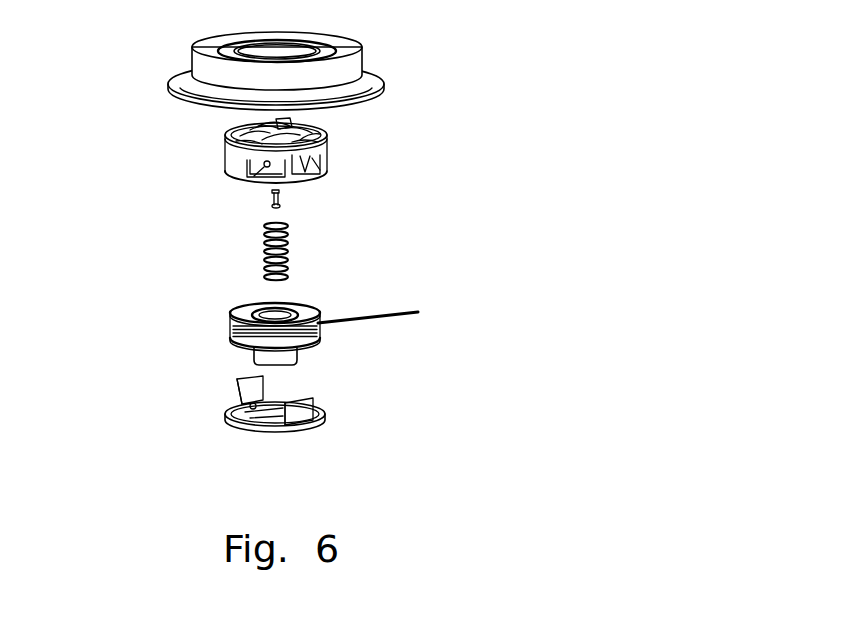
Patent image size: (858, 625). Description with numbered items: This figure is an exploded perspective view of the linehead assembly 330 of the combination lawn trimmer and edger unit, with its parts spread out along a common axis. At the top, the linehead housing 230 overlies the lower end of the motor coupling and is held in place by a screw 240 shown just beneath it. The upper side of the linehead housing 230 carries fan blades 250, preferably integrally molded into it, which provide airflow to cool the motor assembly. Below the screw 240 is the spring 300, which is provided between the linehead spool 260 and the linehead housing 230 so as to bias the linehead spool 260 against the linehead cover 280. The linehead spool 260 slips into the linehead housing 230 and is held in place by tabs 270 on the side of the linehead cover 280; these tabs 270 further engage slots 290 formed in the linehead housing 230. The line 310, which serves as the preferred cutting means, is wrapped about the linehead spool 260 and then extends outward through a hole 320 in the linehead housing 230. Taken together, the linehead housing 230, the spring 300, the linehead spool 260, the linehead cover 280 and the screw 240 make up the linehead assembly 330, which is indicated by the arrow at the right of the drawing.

The linehead housing 230 is at (325, 153).
The screw 240 is at (270, 205).
The fan blades 250 is at (308, 125).
The linehead spool 260 is at (318, 310).
The tabs 270 is at (322, 423).
The linehead cover 280 is at (233, 425).
The slots 290 is at (328, 168).
The spring 300 is at (288, 257).
The line 310 is at (373, 322).
The hole 320 is at (248, 183).
The linehead assembly 330 is at (690, 251).